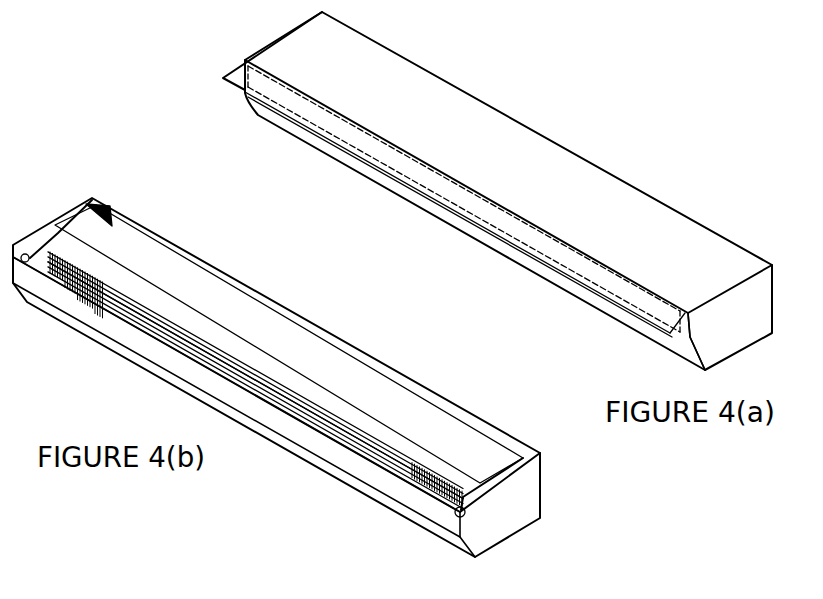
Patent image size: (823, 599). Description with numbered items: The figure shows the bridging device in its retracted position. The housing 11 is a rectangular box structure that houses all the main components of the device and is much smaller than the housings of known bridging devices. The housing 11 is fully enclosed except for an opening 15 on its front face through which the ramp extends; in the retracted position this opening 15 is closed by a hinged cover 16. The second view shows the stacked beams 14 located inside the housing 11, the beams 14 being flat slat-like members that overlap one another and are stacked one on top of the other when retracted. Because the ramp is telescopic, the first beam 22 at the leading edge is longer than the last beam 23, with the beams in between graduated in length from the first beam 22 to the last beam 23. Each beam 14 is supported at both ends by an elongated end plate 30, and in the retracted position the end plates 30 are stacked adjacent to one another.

In FIG. 4A, the housing 11 is at (548, 178).
In FIG. 4A, the opening 15 is at (694, 339).
In FIG. 4A, the hinged cover 16 is at (625, 293).
In FIG. 4B, the beam 14 is at (178, 305).
In FIG. 4B, the first beam 22 is at (400, 442).
In FIG. 4B, the last beam 23 is at (312, 435).
In FIG. 4B, the end plate 30 is at (490, 490).